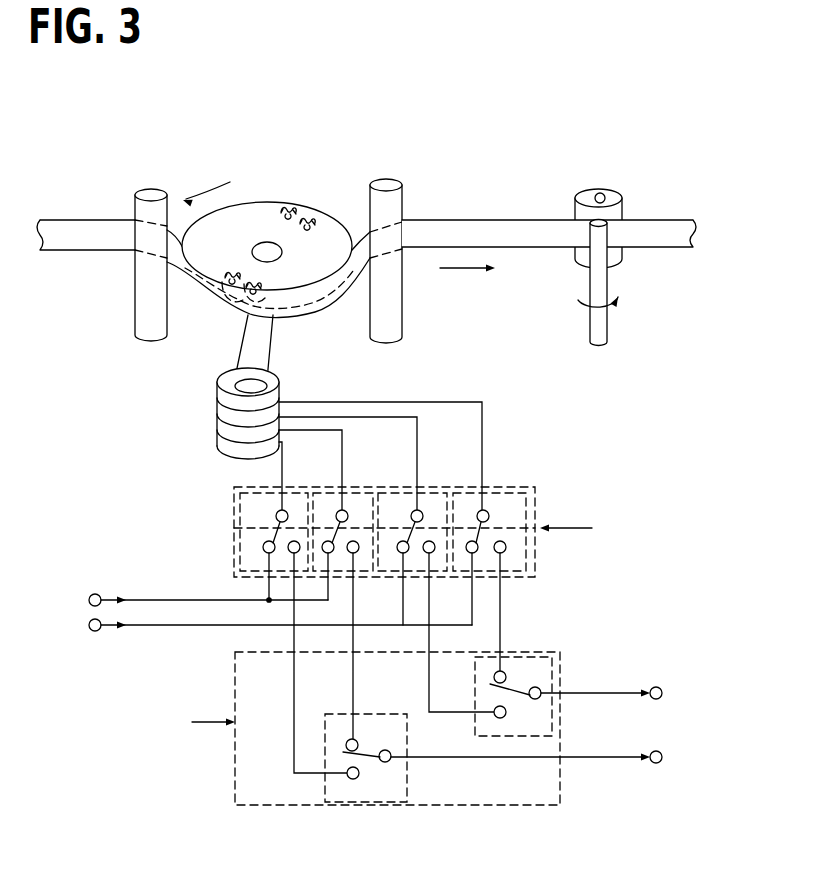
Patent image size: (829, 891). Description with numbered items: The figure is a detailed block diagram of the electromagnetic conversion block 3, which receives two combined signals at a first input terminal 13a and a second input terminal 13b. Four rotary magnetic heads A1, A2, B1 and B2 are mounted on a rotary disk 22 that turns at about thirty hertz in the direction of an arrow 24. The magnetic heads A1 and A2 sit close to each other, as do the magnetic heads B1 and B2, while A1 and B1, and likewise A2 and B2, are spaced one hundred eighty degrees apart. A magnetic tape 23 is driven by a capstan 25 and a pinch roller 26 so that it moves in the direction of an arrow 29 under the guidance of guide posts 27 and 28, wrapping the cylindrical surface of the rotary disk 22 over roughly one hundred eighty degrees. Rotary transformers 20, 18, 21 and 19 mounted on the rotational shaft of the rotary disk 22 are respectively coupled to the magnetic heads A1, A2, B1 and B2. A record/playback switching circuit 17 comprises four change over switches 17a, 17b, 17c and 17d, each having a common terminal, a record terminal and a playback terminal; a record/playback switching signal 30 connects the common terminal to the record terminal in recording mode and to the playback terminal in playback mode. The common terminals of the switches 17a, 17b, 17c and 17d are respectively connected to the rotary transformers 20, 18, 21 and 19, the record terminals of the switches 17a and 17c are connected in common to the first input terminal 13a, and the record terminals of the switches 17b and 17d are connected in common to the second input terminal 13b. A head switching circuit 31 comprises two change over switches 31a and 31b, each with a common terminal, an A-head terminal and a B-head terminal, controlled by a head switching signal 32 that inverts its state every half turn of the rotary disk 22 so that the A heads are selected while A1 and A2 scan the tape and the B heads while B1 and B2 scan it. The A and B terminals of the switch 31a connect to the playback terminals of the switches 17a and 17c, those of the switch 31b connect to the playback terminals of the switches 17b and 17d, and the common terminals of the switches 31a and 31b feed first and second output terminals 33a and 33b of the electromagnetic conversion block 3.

The first input terminal 13a is at (87, 595).
The second input terminal 13b is at (87, 633).
The record/playback switching circuit 17 is at (513, 487).
The change over switch 17a is at (357, 495).
The change over switch 17b is at (493, 497).
The change over switch 17c is at (295, 497).
The change over switch 17d is at (427, 495).
The rotary transformer 18 is at (217, 392).
The rotary transformer 19 is at (214, 410).
The rotary transformer 20 is at (216, 425).
The rotary transformer 21 is at (218, 447).
The rotary disk 22 is at (243, 203).
The magnetic tape 23 is at (495, 218).
The arrow 24 is at (212, 183).
The capstan 25 is at (607, 325).
The pinch roller 26 is at (623, 197).
The guide post 27 is at (150, 186).
The guide post 28 is at (397, 177).
The arrow 29 is at (457, 270).
The record/playback switching signal 30 is at (570, 530).
The head switching circuit 31 is at (233, 753).
The change over switch 31a is at (405, 777).
The change over switch 31b is at (482, 728).
The head switching signal 32 is at (207, 717).
The first output terminal 33a is at (664, 752).
The second output terminal 33b is at (664, 688).
The magnetic head A1 is at (264, 286).
The magnetic head A2 is at (224, 272).
The magnetic head B1 is at (285, 204).
The magnetic head B2 is at (318, 213).
The electromagnetic conversion block 3 is at (725, 832).